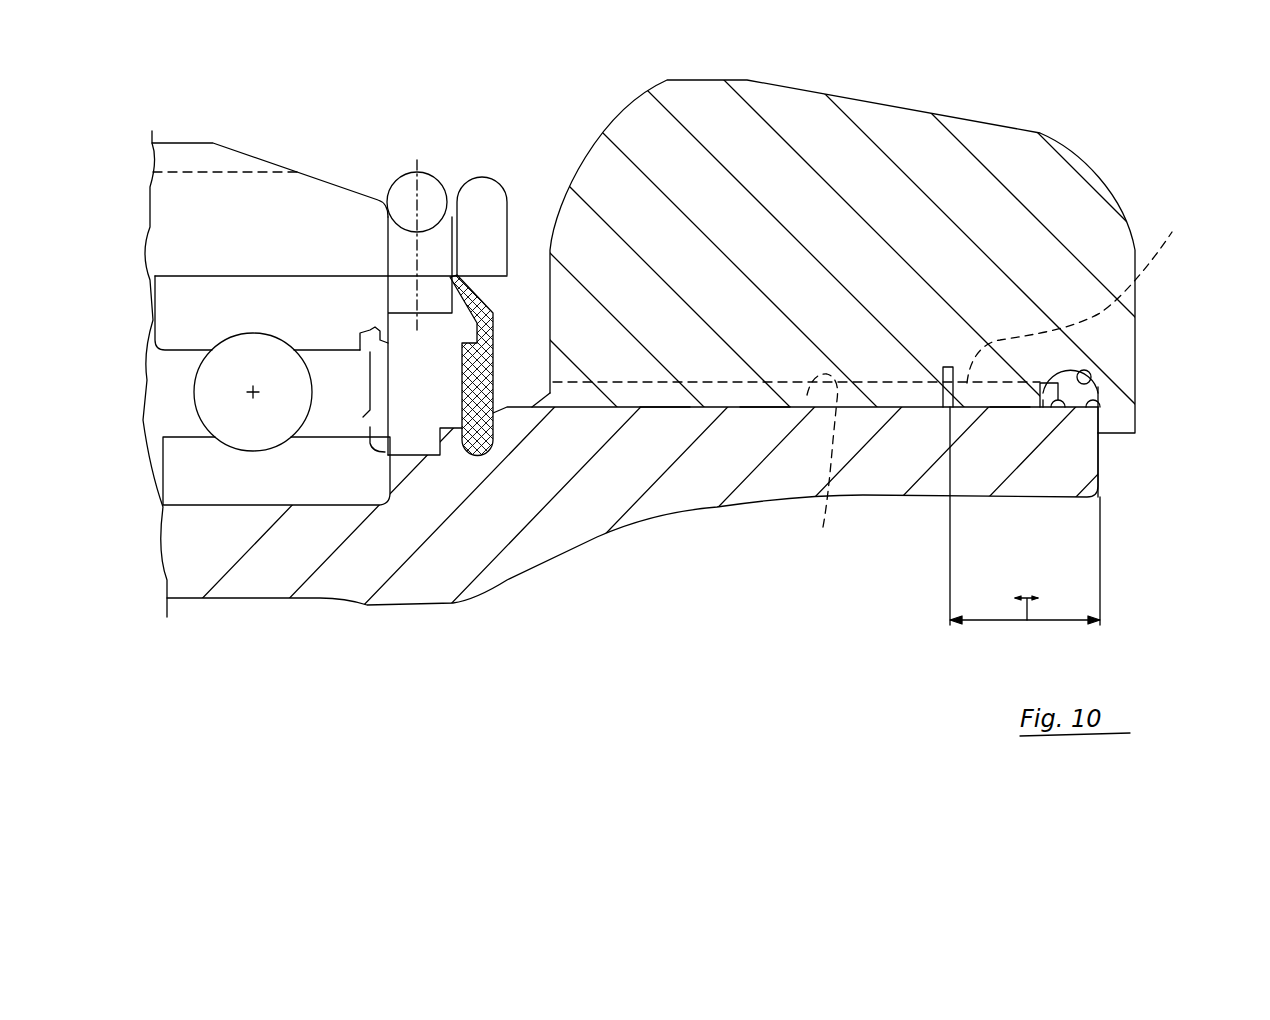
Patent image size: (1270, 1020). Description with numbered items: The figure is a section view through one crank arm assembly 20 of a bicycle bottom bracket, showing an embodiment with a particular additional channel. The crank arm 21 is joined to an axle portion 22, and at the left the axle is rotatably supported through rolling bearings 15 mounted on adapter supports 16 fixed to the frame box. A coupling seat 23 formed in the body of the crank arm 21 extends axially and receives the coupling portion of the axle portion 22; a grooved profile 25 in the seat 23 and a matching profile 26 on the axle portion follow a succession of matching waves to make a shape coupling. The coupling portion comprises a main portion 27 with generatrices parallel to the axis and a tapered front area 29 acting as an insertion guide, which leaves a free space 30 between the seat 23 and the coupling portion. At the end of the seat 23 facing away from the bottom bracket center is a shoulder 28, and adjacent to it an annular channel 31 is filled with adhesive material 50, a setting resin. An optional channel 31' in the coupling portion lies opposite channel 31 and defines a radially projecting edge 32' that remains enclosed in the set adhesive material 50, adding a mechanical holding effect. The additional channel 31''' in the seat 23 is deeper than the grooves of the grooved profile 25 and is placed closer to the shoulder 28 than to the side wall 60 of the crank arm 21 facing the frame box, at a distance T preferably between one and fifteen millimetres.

The rolling bearings 15 is at (262, 490).
The adapter supports 16 is at (312, 190).
The crank arm assembly 20 is at (703, 597).
The crank arm 21 is at (886, 125).
The axle portion 22 is at (583, 520).
The coupling seat 23 is at (667, 397).
The grooved profile 25 is at (767, 410).
The matching profile 26 is at (796, 464).
The main portion 27 is at (1082, 290).
The shoulder 28 is at (1117, 423).
The tapered front area 29 is at (1047, 353).
The free space 30 is at (997, 393).
The annular channel 31 is at (1141, 358).
The channel 31' is at (1032, 494).
The additional channel 31''' is at (906, 337).
The radially projecting edge 32' is at (1167, 445).
The adhesive material 50 is at (1082, 393).
The side wall 60 is at (545, 330).